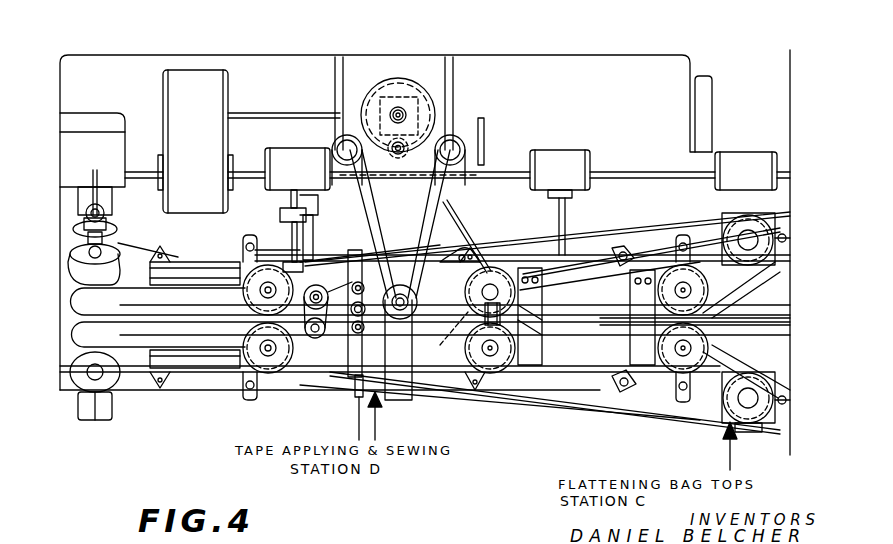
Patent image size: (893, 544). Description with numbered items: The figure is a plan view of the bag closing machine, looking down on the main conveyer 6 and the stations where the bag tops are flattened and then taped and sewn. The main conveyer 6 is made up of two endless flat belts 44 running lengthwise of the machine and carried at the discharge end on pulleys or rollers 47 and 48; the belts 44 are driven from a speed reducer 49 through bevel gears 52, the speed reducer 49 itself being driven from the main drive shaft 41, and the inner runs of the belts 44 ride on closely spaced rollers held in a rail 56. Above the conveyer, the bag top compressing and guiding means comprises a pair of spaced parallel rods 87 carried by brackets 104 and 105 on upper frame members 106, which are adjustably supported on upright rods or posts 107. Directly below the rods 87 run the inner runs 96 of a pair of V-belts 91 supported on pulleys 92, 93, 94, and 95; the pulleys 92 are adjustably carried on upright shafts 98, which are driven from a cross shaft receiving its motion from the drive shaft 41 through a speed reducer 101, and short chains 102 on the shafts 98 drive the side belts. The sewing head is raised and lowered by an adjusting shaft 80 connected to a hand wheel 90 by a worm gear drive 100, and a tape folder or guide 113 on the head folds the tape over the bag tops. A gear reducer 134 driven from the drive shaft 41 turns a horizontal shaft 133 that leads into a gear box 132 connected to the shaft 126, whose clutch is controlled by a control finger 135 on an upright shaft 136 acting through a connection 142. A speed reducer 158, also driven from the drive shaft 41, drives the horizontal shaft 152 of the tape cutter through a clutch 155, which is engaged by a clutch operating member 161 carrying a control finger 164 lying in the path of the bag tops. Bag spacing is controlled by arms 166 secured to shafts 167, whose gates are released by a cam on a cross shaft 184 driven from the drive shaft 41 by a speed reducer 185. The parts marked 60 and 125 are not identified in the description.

The main conveyer 6 is at (194, 335).
The main drive shaft 41 is at (243, 170).
The endless flat belts 44 is at (90, 298).
The pulley or roller 47 is at (120, 265).
The pulley or roller 48 is at (113, 380).
The speed reducer 49 is at (92, 118).
The bevel gears 52 is at (75, 229).
The rail 56 is at (187, 277).
The idler pulleys 60 is at (347, 148).
The adjusting shaft 80 is at (383, 170).
The rods 87 is at (765, 315).
The hand wheel 90 is at (485, 128).
The V-belts 91 is at (586, 228).
The pulleys 92 is at (749, 410).
The pulleys 93 is at (668, 280).
The pulleys 94 is at (490, 280).
The pulleys 95 is at (242, 302).
The inner runs of V-belts 96 is at (372, 320).
The upright shafts 98 is at (752, 238).
The worm gear drive 100 is at (405, 160).
The speed reducer 101 is at (740, 165).
The short chains 102 is at (786, 238).
The bracket 104 is at (636, 294).
The bracket 105 is at (541, 292).
The upper frame members 106 is at (596, 272).
The upright rods or posts 107 is at (236, 246).
The tape folder or guide 113 is at (458, 265).
The drive pulley 125 is at (397, 78).
The shaft 126 is at (397, 114).
The gear box 132 is at (416, 98).
The horizontal shaft 133 is at (288, 112).
The gear reducer 134 is at (205, 85).
The control element or finger 135 is at (445, 335).
The upright shaft 136 is at (492, 285).
The connection 142 is at (455, 223).
The horizontal shaft 152 is at (282, 245).
The clutch 155 is at (314, 212).
The speed reducer 158 is at (298, 155).
The clutch operating arm or member 161 is at (335, 250).
The control finger or element 164 is at (347, 407).
The arms 166 is at (572, 256).
The shafts 167 is at (626, 248).
The cross shaft 184 is at (558, 211).
The speed reducer 185 is at (568, 162).